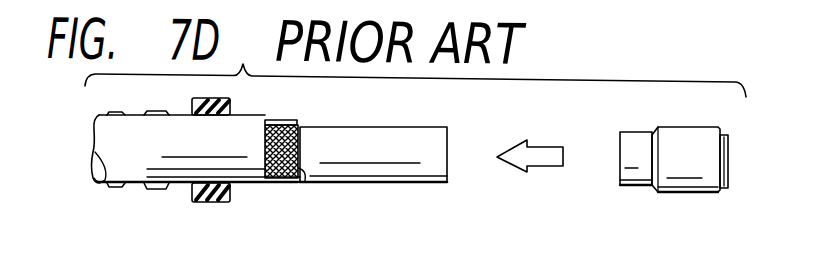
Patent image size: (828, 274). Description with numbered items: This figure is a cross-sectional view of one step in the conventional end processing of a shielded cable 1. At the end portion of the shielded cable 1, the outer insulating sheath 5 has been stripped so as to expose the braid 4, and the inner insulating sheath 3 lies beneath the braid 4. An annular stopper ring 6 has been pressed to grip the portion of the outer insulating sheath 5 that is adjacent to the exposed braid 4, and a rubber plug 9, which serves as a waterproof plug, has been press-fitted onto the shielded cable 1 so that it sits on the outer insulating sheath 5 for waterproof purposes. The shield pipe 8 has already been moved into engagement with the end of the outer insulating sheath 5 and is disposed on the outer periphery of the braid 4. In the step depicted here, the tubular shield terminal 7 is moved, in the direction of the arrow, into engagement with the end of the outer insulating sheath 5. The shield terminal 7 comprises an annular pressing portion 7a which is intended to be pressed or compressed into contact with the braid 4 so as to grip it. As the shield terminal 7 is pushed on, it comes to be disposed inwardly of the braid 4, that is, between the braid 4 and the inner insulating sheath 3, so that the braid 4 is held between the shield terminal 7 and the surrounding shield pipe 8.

The shielded cable 1 is at (345, 118).
The inner insulating sheath 3 is at (417, 177).
The braid 4 is at (308, 179).
The outer insulating sheath 5 is at (249, 177).
The stopper ring 6 is at (150, 112).
The shield terminal 7 is at (687, 135).
The annular pressing portion 7a is at (634, 138).
The shield pipe 8 is at (280, 120).
The rubber plug 9 is at (207, 98).